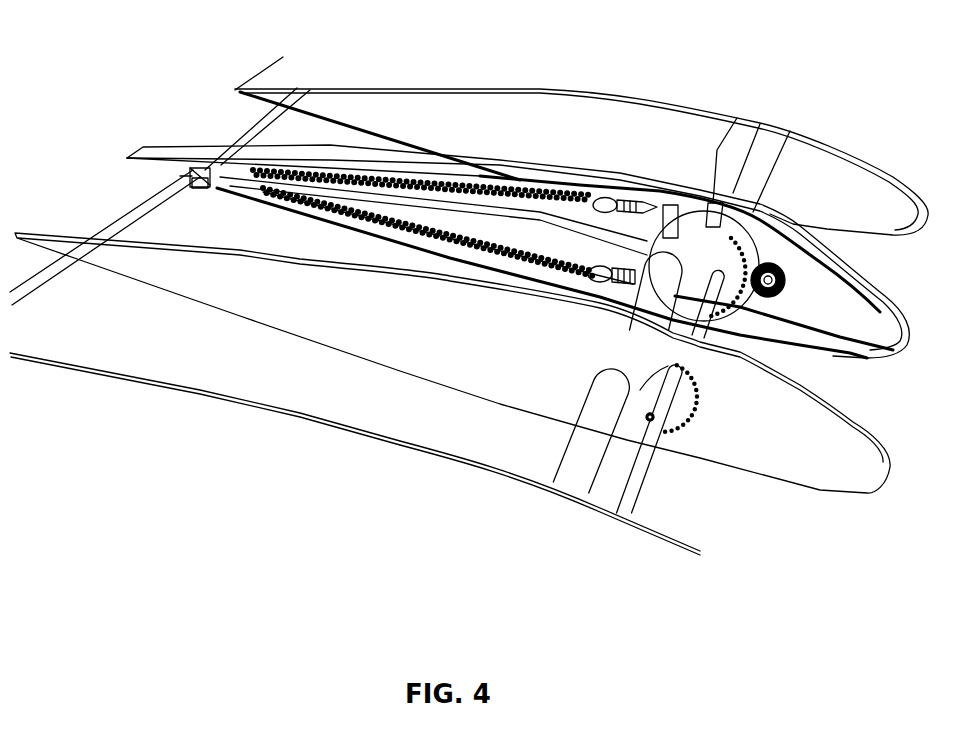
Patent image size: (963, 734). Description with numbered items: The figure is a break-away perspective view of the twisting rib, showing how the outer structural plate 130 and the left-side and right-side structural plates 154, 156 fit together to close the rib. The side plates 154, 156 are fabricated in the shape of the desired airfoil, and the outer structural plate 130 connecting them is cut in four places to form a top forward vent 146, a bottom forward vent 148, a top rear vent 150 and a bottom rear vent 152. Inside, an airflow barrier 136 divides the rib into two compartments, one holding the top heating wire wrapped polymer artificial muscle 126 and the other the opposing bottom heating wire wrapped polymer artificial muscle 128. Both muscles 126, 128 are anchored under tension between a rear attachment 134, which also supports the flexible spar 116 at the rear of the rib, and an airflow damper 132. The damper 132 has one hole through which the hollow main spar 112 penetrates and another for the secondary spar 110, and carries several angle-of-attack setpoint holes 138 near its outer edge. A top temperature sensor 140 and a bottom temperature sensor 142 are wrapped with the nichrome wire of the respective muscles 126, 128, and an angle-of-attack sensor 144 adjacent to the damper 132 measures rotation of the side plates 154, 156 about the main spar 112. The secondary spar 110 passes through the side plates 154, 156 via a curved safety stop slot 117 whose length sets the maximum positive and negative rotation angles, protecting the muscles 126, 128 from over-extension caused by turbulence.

The secondary spar 110 is at (643, 467).
The hollow main spar 112 is at (672, 205).
The flexible spar 116 is at (131, 210).
The safety stop slot 117 is at (612, 370).
The top heating wire wrapped polymer artificial muscle 126 is at (387, 175).
The bottom heating wire wrapped polymer artificial muscle 128 is at (347, 210).
The outer structural plate 130 is at (450, 156).
The airflow damper 132 is at (712, 233).
The rear attachment 134 is at (187, 176).
The airflow barrier 136 is at (420, 207).
The angle-of-attack setpoint holes 138 is at (743, 318).
The top temperature sensor 140 is at (610, 192).
The bottom temperature sensor 142 is at (598, 294).
The angle-of-attack sensor 144 is at (787, 293).
The top forward vent 146 is at (671, 265).
The bottom forward vent 148 is at (632, 287).
The top rear vent 150 is at (212, 157).
The bottom rear vent 152 is at (212, 187).
The left-side structural plate 154 is at (893, 292).
The right-side structural plate 156 is at (867, 430).